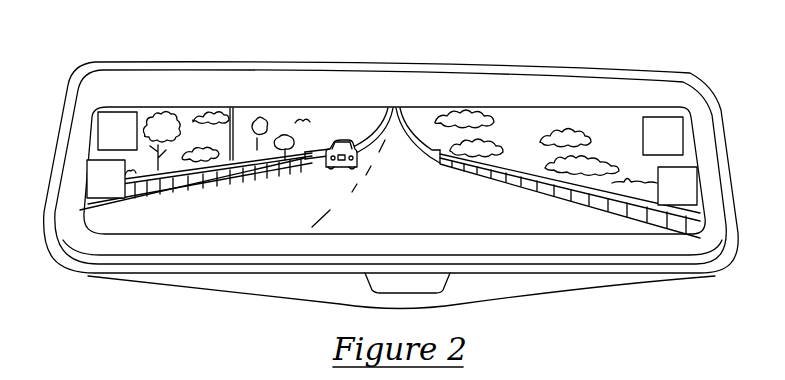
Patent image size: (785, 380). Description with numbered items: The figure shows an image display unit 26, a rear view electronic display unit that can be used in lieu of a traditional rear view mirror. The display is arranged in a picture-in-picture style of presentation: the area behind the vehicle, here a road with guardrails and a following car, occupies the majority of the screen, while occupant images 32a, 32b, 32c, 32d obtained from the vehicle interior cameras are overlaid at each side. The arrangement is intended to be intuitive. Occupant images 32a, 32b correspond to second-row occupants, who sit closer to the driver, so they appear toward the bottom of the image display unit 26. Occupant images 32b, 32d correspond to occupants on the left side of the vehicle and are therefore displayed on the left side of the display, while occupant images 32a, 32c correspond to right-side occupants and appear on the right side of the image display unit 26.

The image display unit 26 is at (579, 51).
The occupant image 32a is at (675, 203).
The occupant image 32b is at (101, 196).
The occupant image 32c is at (672, 122).
The occupant image 32d is at (115, 115).